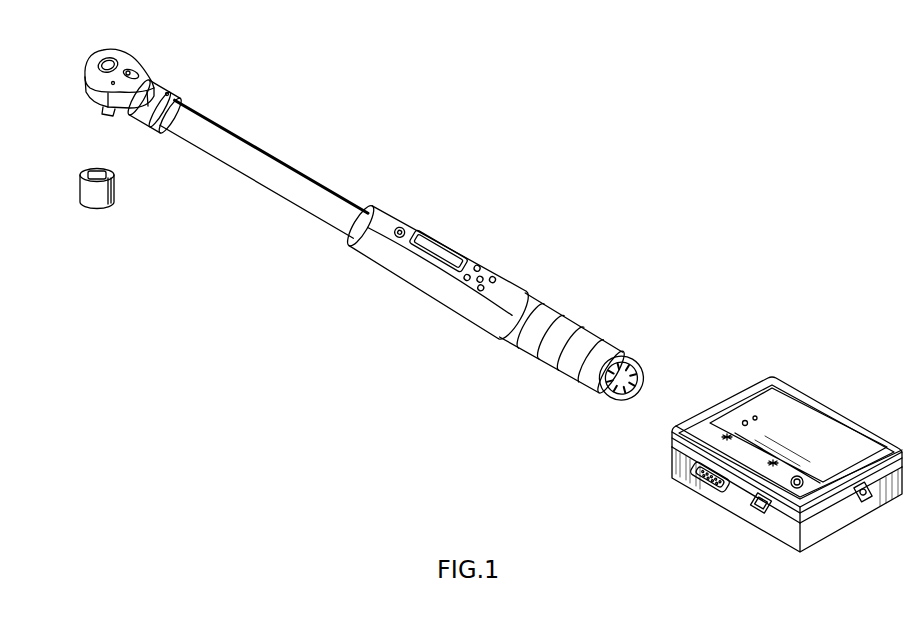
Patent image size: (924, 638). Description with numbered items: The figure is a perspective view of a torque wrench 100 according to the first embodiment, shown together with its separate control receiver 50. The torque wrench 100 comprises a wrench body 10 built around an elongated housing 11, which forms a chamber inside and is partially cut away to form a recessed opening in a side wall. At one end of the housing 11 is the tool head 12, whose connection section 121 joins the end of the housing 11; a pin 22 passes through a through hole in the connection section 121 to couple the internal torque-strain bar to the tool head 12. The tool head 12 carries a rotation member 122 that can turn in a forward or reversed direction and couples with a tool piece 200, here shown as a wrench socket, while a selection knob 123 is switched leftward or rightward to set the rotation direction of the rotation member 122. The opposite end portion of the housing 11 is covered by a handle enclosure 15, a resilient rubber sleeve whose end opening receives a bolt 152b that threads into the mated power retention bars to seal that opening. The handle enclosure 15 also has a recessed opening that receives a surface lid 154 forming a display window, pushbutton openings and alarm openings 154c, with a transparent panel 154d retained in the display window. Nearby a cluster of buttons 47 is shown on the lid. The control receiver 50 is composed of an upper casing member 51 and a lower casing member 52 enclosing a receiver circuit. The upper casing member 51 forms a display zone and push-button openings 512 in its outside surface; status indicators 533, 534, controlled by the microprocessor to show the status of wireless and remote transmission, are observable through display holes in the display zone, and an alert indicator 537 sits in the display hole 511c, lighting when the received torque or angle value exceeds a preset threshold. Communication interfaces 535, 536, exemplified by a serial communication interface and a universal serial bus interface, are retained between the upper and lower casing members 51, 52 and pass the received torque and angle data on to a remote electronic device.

The torque wrench 100 is at (703, 95).
The wrench body 10 is at (310, 267).
The housing 11 is at (255, 160).
The tool head 12 is at (126, 62).
The connection section 121 is at (151, 112).
The rotation member 122 is at (100, 104).
The selection knob 123 is at (142, 72).
The pin 22 is at (167, 94).
The tool piece 200 is at (92, 190).
The surface lid 154 is at (425, 270).
The alarm openings 154c is at (402, 233).
The transparent panel 154d is at (437, 250).
The operation buttons 47 is at (479, 268).
The push-button openings 512 is at (472, 283).
The handle enclosure 15 is at (568, 330).
The bolt 152b is at (641, 375).
The control receiver 50 is at (709, 528).
The upper casing member 51 is at (670, 446).
The lower casing member 52 is at (818, 534).
The display hole 511c is at (845, 440).
The status indicator 533 is at (745, 420).
The status indicator 534 is at (756, 415).
The communication interface 535 is at (700, 482).
The communication interface 536 is at (760, 514).
The alert indicator 537 is at (868, 503).